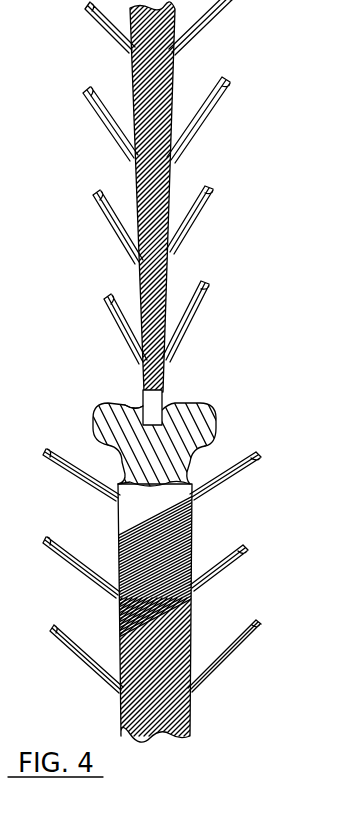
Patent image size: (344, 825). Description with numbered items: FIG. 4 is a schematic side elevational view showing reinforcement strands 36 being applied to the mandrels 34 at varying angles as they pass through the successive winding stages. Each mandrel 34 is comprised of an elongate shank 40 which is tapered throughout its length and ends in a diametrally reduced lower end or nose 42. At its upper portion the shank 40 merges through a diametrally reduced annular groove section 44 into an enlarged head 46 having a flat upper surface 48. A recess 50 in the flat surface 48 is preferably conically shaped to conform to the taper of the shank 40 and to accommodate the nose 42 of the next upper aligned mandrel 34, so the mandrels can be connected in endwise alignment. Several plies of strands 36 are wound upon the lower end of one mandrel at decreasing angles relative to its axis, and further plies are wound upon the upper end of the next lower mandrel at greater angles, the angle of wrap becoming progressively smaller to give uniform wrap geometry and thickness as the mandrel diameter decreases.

The mandrel 34 is at (140, 371).
The needles 36 is at (215, 11).
The shank 40 is at (133, 170).
The nose 42 is at (157, 392).
The annular groove section 44 is at (183, 461).
The head 46 is at (191, 422).
The flat upper surface 48 is at (187, 404).
The recess 50 is at (135, 404).